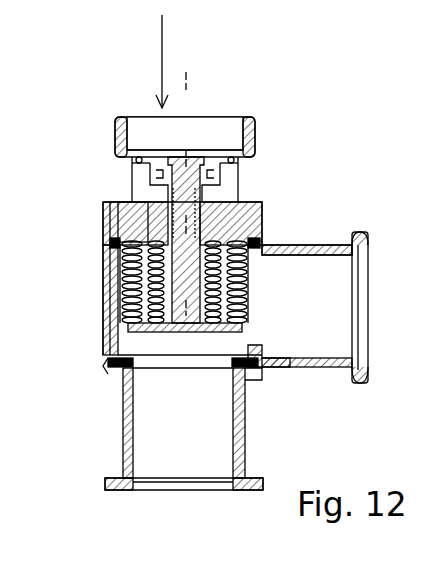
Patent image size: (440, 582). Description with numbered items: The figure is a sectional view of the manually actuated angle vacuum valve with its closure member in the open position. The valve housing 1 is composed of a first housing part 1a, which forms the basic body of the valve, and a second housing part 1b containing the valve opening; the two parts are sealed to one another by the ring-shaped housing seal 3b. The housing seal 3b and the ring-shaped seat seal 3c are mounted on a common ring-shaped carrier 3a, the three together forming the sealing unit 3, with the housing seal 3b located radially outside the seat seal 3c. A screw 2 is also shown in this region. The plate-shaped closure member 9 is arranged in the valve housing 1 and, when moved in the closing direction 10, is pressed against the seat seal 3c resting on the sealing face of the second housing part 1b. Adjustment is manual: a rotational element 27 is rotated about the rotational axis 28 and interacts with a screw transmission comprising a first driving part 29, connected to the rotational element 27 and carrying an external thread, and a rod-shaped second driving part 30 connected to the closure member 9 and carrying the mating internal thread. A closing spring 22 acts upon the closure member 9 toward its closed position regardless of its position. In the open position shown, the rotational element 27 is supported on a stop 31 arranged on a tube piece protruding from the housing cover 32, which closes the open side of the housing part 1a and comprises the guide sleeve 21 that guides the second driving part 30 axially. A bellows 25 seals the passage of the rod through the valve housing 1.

The valve housing 1 is at (90, 356).
The first housing part 1a is at (110, 297).
The second housing part 1b is at (123, 428).
The screw 2 is at (250, 380).
The sealing unit 3 is at (115, 363).
The carrier 3a is at (108, 356).
The housing seal 3b is at (265, 365).
The seat seal 3c is at (235, 363).
The closure member 9 is at (176, 332).
The closing direction 10 is at (163, 63).
The guide sleeve 21 is at (140, 262).
The closing spring 22 is at (165, 270).
The bellows 25 is at (255, 240).
The rotational element 27 is at (253, 129).
The rotational axis 28 is at (185, 106).
The first driving part 29 is at (190, 207).
The second driving part 30 is at (190, 312).
The stop 31 is at (132, 160).
The housing cover 32 is at (120, 212).